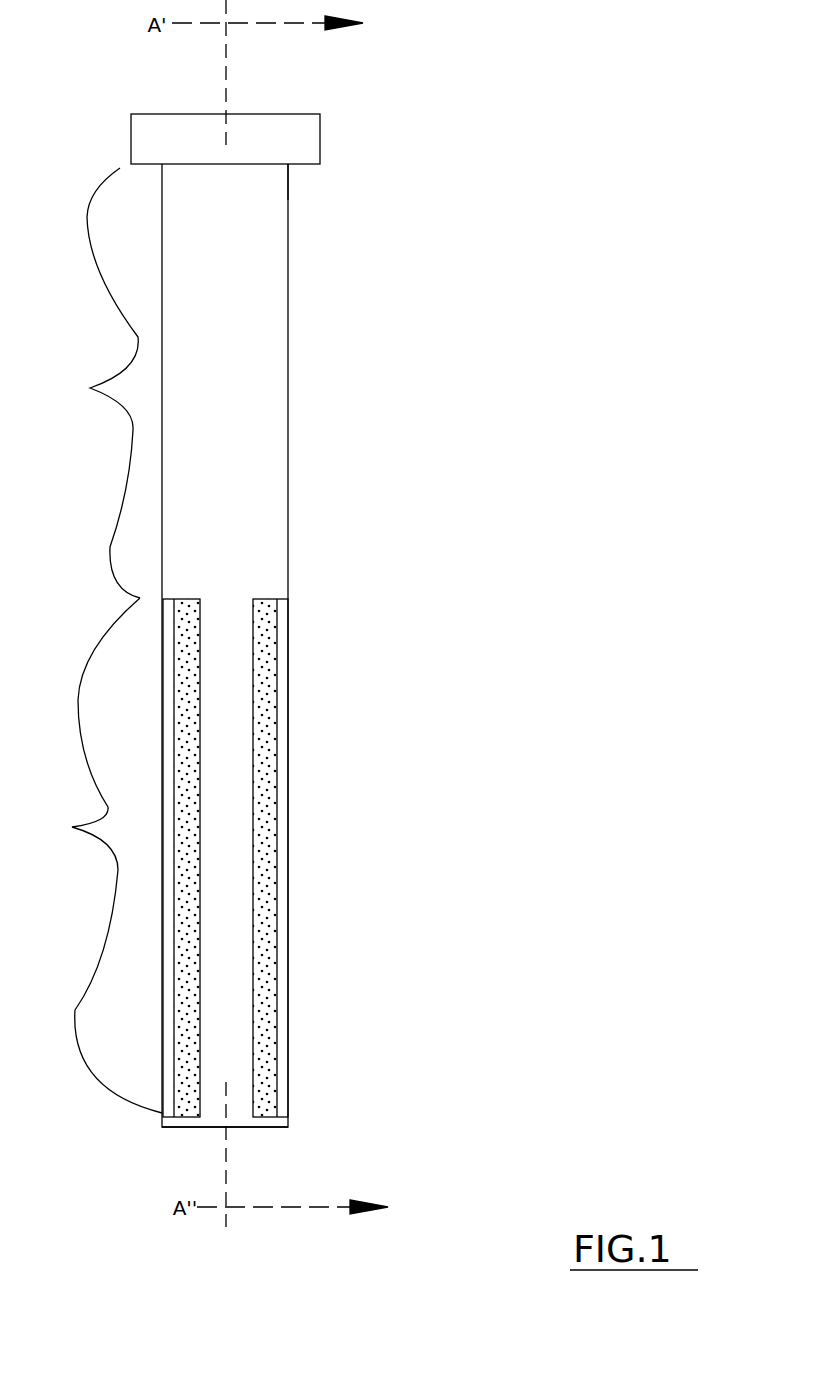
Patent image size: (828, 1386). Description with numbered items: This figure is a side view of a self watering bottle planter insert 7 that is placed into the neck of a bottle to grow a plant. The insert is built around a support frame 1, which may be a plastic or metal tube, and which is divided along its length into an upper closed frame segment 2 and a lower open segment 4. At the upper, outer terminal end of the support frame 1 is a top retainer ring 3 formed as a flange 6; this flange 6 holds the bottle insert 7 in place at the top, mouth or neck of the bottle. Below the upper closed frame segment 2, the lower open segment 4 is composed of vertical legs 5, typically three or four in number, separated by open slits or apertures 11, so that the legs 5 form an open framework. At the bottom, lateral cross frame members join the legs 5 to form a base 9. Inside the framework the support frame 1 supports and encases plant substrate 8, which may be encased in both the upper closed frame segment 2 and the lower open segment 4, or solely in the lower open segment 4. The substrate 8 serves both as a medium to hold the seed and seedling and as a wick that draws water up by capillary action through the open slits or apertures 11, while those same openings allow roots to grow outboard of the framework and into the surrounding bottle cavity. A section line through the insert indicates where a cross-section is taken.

The support frame 1 is at (290, 325).
The upper closed frame segment 2 is at (99, 383).
The top retainer ring 3 is at (280, 114).
The lower open segment 4 is at (106, 855).
The vertical legs 5 is at (237, 738).
The flange 6 is at (300, 165).
The self watering bottle planter insert 7 is at (393, 103).
The plant substrate 8 is at (263, 622).
The base 9 is at (252, 1128).
The open slits or apertures 11 is at (264, 978).